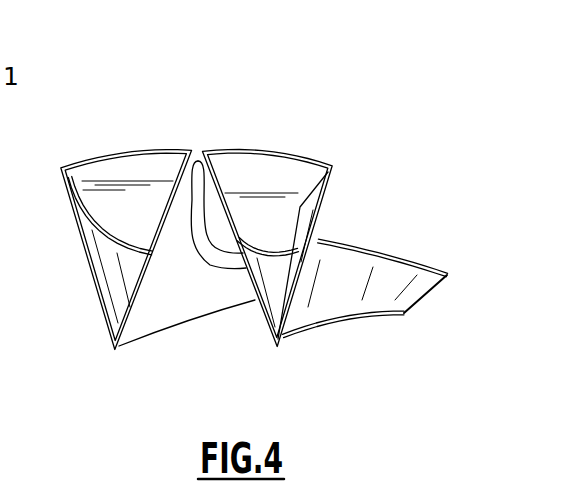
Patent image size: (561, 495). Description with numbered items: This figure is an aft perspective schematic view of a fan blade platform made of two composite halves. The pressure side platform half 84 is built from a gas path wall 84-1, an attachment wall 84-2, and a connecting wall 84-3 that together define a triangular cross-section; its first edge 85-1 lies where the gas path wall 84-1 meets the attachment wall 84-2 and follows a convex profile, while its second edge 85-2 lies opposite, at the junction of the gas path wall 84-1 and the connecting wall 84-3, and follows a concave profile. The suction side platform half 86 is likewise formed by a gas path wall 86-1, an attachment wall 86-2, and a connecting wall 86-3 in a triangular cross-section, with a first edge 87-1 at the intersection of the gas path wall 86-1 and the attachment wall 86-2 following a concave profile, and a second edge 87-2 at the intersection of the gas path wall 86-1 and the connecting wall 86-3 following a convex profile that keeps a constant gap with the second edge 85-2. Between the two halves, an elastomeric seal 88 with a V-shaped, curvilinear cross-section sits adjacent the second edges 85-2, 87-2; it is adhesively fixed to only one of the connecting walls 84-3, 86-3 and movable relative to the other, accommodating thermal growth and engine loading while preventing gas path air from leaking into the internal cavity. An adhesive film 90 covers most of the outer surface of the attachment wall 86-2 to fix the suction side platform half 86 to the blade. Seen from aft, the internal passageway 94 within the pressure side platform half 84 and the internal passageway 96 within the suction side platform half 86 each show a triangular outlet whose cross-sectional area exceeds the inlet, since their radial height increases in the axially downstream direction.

The pressure side platform half 84 is at (119, 67).
The gas path wall 84-1 is at (118, 151).
The attachment wall 84-2 is at (97, 263).
The connecting wall 84-3 is at (143, 318).
The first edge 85-1 is at (62, 167).
The second edge 85-2 is at (189, 151).
The suction side platform half 86 is at (329, 123).
The gas path wall 86-1 is at (228, 150).
The attachment wall 86-2 is at (347, 318).
The connecting wall 86-3 is at (263, 327).
The first edge 87-1 is at (360, 253).
The second edge 87-2 is at (208, 156).
The seal 88 is at (197, 157).
The adhesive film 90 is at (413, 290).
The internal passageway 94 is at (82, 230).
The internal passageway 96 is at (308, 174).